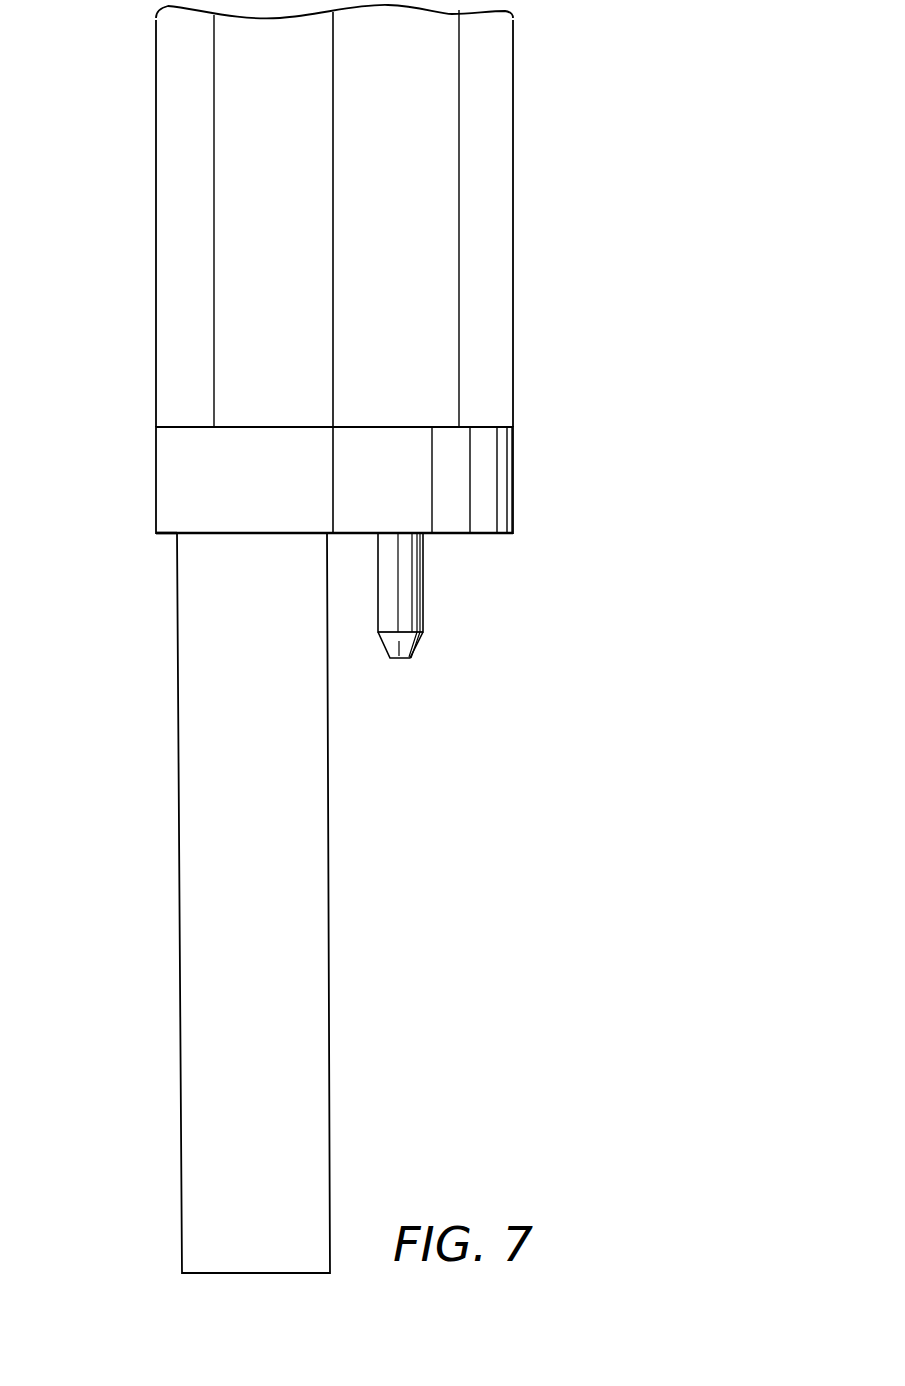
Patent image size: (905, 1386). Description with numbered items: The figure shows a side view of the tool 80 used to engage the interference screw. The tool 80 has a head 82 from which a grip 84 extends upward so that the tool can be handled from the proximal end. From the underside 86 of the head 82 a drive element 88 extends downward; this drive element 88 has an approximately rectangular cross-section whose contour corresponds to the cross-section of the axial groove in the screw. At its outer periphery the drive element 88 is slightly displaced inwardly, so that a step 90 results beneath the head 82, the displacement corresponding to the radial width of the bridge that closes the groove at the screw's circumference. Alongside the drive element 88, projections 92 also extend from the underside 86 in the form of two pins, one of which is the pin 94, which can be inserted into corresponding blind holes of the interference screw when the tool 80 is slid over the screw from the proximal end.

The tool 80 is at (373, 639).
The head 82 is at (503, 482).
The grip 84 is at (492, 294).
The underside 86 is at (463, 534).
The drive element 88 is at (302, 818).
The step 90 is at (168, 538).
The projections 92 is at (411, 584).
The pin 94 is at (422, 642).